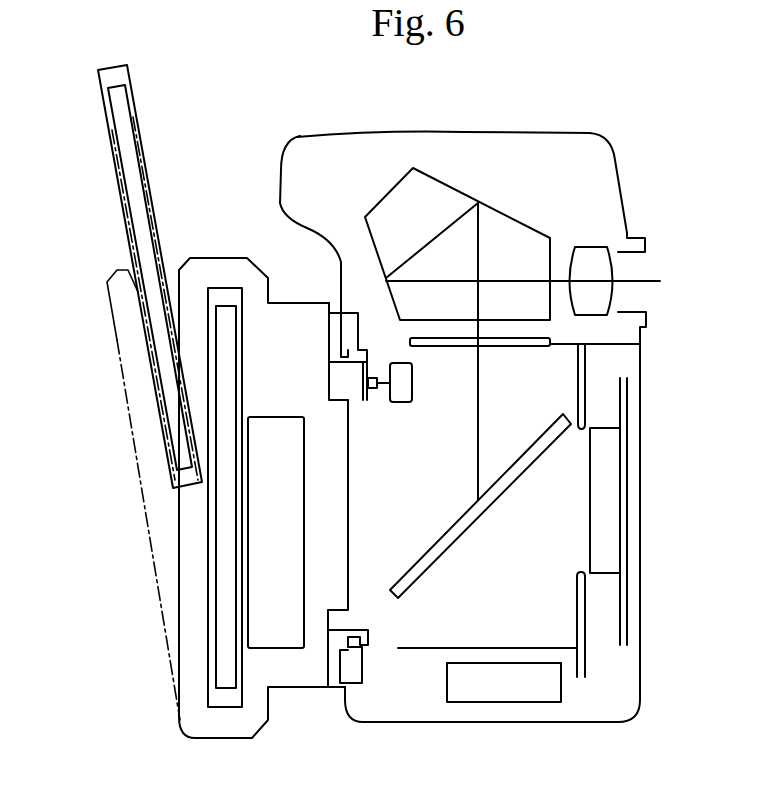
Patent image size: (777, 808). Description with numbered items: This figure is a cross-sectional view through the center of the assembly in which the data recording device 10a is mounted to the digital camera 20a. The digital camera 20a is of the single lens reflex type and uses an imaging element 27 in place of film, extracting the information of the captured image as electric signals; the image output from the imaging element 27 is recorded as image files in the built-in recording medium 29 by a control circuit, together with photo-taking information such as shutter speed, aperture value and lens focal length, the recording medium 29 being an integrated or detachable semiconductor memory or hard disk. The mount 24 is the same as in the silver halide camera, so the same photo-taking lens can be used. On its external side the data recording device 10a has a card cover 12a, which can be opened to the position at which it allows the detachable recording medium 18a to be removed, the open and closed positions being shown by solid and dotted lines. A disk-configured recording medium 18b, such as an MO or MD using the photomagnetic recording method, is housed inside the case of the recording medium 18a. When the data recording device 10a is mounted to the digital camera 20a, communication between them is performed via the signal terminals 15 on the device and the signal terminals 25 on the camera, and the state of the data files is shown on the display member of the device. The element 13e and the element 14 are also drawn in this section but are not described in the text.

The data recording device 10a is at (237, 248).
The card cover 12a is at (105, 298).
The battery compartment 13e is at (290, 648).
The engaging projection 14 is at (360, 627).
The signal terminals 15 is at (364, 400).
The detachable recording medium 18a is at (137, 108).
The disk-configured recording medium 18b is at (143, 188).
The digital camera 20a is at (658, 356).
The mount 24 is at (360, 658).
The signal terminals 25 is at (378, 390).
The imaging element 27 is at (605, 468).
The recording medium 29 is at (507, 702).